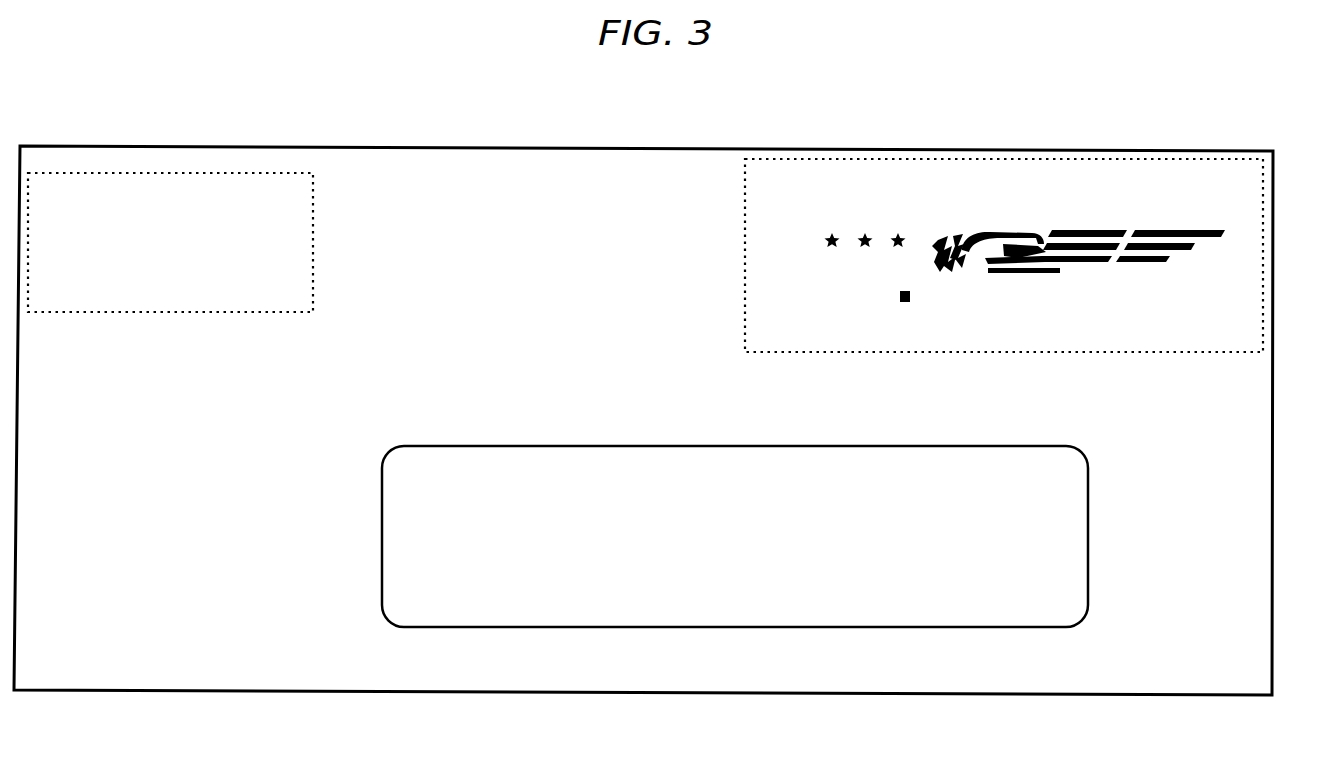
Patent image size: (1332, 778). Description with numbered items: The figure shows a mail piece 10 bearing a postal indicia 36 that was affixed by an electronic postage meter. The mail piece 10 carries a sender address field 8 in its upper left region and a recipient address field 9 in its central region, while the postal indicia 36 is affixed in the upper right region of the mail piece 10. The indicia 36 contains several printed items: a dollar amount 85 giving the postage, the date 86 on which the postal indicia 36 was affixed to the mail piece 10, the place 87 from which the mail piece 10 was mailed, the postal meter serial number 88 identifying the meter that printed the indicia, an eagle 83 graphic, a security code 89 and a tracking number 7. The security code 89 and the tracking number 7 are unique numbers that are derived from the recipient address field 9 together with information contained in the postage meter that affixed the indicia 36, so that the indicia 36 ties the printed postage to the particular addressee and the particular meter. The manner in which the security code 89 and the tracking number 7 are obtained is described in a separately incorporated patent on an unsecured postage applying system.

The mail piece 10 is at (157, 675).
The sender address field 8 is at (158, 180).
The recipient address field 9 is at (382, 515).
The tracking number 7 is at (770, 168).
The postal indicia 36 is at (904, 251).
The eagle 83 is at (1175, 236).
The dollar amount 85 is at (1045, 286).
The postal meter serial number 88 is at (1225, 280).
The date 86 is at (1226, 303).
The place 87 is at (1228, 325).
The security code 89 is at (888, 331).